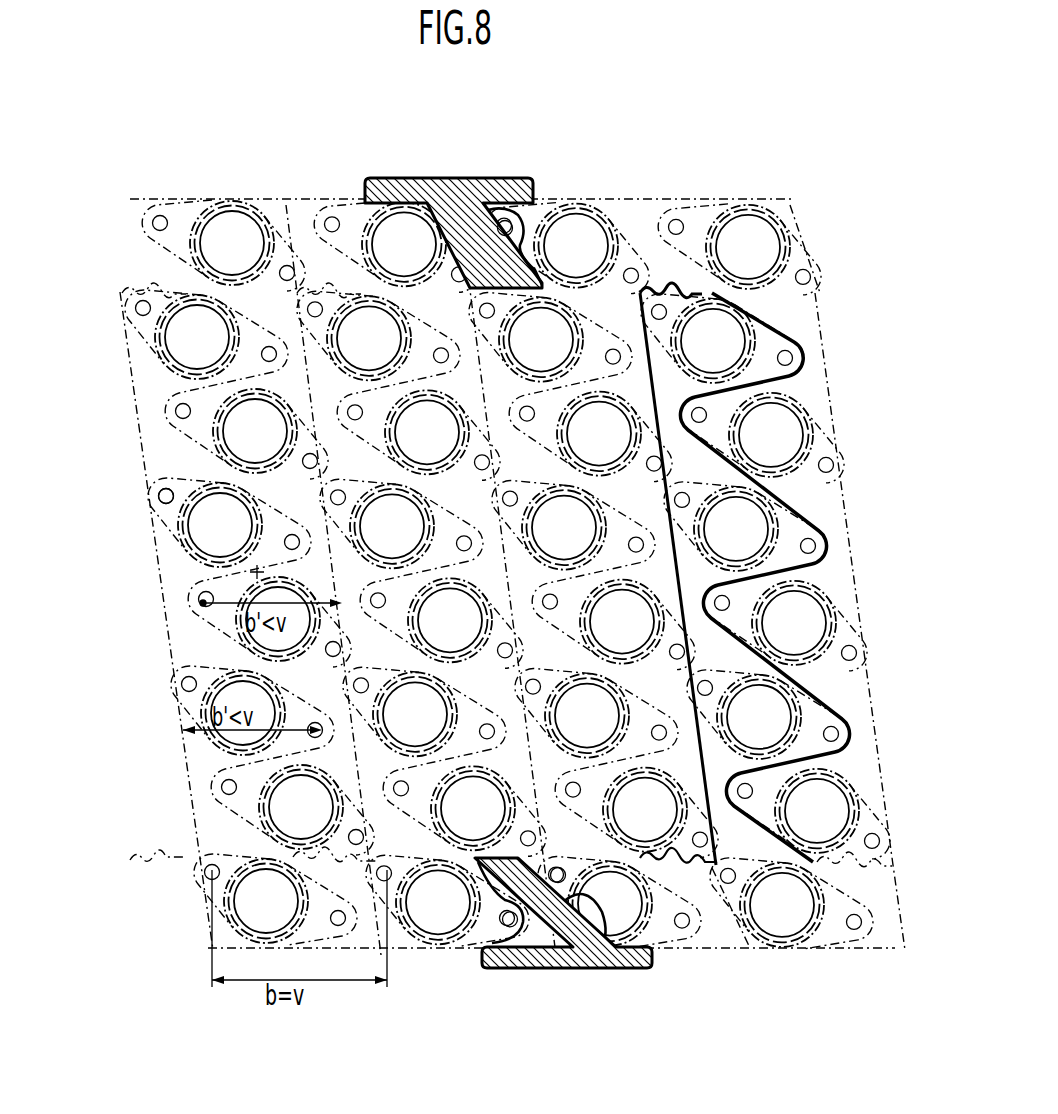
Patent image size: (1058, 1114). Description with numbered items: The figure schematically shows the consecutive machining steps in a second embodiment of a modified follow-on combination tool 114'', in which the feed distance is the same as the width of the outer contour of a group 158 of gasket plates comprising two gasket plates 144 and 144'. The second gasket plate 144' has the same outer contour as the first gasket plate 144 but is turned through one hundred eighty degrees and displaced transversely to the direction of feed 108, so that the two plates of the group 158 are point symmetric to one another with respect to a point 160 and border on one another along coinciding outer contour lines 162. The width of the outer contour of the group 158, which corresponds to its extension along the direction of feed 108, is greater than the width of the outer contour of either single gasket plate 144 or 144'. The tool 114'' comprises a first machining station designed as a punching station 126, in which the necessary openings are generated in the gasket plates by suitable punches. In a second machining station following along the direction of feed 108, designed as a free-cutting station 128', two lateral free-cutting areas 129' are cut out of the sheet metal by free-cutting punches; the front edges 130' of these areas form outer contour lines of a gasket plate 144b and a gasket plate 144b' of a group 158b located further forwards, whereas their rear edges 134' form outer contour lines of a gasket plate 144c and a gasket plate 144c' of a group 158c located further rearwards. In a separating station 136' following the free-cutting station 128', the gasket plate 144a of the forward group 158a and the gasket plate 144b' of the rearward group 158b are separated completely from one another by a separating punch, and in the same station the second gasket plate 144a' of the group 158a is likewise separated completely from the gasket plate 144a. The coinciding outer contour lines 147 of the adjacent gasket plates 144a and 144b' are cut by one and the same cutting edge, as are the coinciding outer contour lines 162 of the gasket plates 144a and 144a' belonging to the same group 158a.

The direction of feed 108 is at (485, 1030).
The modified follow-on combination tool 114'' is at (445, 147).
The punching station 126 is at (189, 186).
The free-cutting station 128' is at (453, 191).
The free-cutting areas 129' is at (569, 577).
The front edges of the free-cutting areas 130' is at (585, 577).
The rear edges of the free-cutting areas 134' is at (482, 577).
The separating station 136' is at (739, 195).
The first gasket plate 144 is at (218, 621).
The second gasket plate 144' is at (206, 237).
The gasket plate 144a is at (776, 621).
The second gasket plate 144a' is at (865, 621).
The gasket plate 144b is at (680, 580).
The gasket plate 144b' is at (586, 238).
The gasket plate 144c is at (416, 632).
The gasket plate 144c' is at (395, 193).
The outer contour lines 147 is at (622, 378).
The group of gasket plates 158 is at (172, 281).
The group of gasket plates 158a is at (845, 885).
The group of gasket plates 158b is at (712, 957).
The group of gasket plates 158c is at (342, 281).
The point 160 is at (250, 572).
The outer contour lines 162 is at (157, 448).